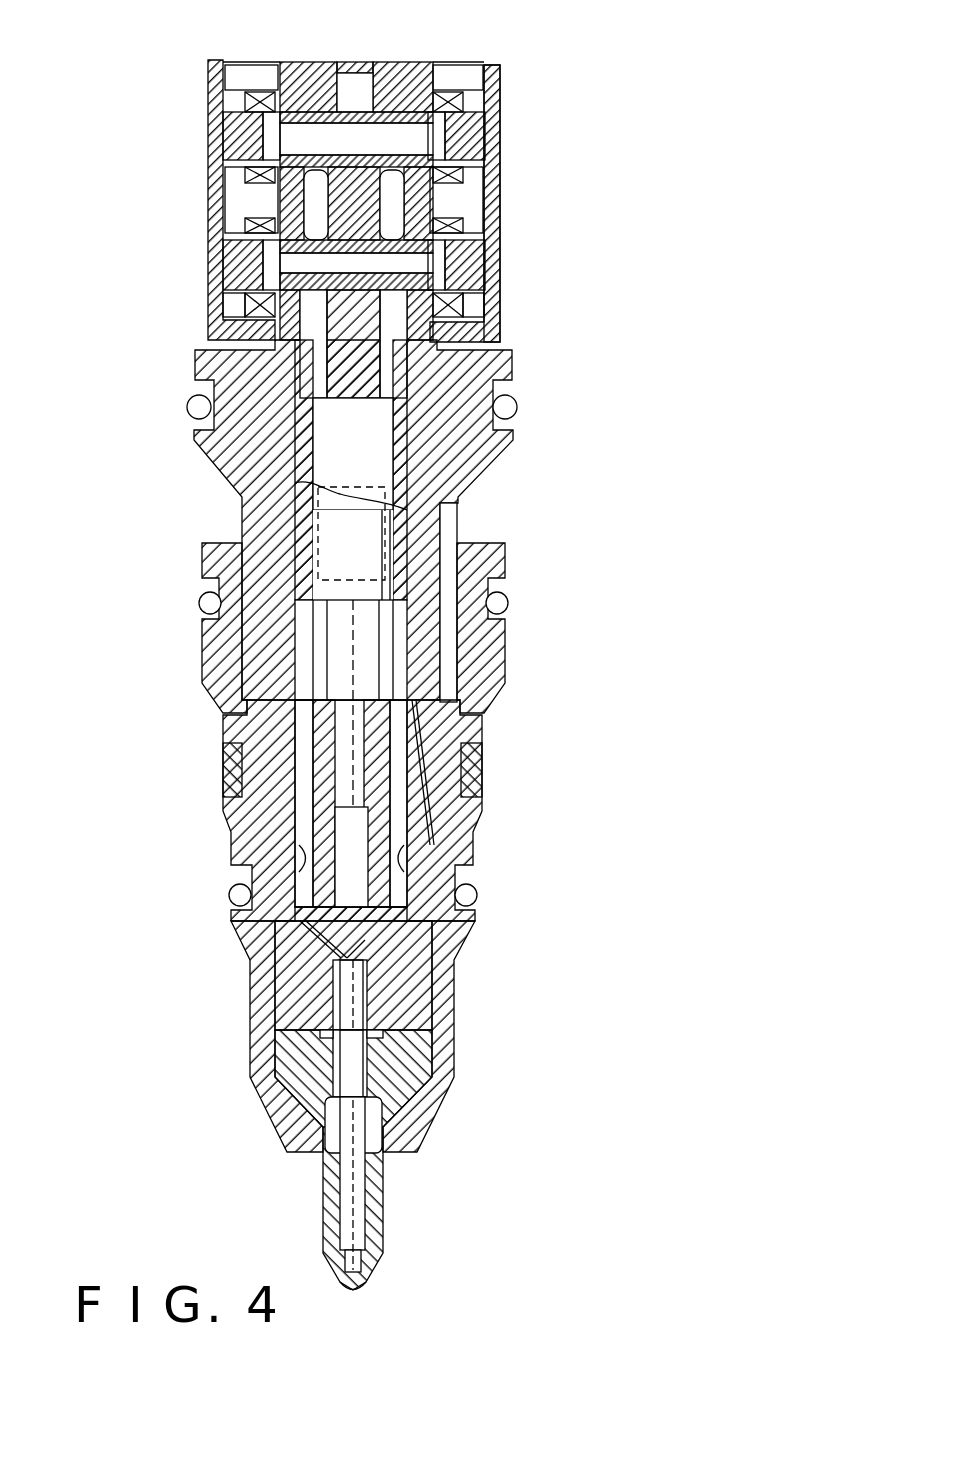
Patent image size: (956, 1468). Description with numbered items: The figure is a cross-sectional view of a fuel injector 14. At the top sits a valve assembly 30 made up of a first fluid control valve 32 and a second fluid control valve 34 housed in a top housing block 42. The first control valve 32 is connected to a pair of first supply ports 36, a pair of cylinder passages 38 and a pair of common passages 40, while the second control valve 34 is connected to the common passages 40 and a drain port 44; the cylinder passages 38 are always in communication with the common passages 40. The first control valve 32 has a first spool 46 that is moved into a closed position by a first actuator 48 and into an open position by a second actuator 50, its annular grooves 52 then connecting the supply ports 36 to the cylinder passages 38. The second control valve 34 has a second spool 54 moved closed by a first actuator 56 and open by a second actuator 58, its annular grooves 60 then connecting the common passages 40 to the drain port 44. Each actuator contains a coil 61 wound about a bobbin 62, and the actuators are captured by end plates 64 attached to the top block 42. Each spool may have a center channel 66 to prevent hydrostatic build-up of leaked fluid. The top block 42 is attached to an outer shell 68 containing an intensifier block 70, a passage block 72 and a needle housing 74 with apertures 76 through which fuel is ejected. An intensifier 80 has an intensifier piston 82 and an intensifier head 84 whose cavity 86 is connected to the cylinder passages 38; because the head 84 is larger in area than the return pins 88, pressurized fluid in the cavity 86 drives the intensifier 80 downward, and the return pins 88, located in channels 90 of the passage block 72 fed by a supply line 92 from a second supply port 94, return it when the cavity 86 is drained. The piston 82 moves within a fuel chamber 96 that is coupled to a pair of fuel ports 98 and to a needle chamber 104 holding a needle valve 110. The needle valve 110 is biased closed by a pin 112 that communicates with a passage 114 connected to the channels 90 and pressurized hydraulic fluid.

The fuel injector 14 is at (550, 609).
The valve assembly 30 is at (576, 212).
The first fluid control valve 32 is at (432, 300).
The second fluid control valve 34 is at (433, 155).
The first supply ports 36 is at (300, 352).
The cylinder passages 38 is at (516, 408).
The common passages 40 is at (393, 202).
The top housing block 42 is at (445, 90).
The drain port 44 is at (353, 82).
The first spool 46 is at (281, 278).
The first actuator 48 is at (382, 298).
The second actuator 50 is at (241, 313).
The annular grooves 52 is at (392, 370).
The second spool 54 is at (230, 160).
The first actuator 56 is at (500, 62).
The second actuator 58 is at (257, 112).
The annular grooves 60 is at (380, 75).
The coil 61 is at (262, 90).
The bobbin 62 is at (247, 92).
The end plates 64 is at (245, 255).
The center channel 66 is at (407, 268).
The outer shell 68 is at (479, 663).
The intensifier block 70 is at (450, 802).
The passage block 72 is at (404, 971).
The needle housing 74 is at (404, 1076).
The apertures 76 is at (367, 1274).
The intensifier 80 is at (318, 648).
The intensifier piston 82 is at (343, 718).
The intensifier head 84 is at (305, 527).
The cavity 86 is at (353, 454).
The return pins 88 is at (430, 748).
The channels 90 is at (402, 843).
The supply line 92 is at (448, 752).
The second supply port 94 is at (457, 514).
The fuel chamber 96 is at (369, 864).
The fuel ports 98 is at (233, 763).
The needle chamber 104 is at (394, 1138).
The needle valve 110 is at (347, 1187).
The pin 112 is at (345, 1000).
The passage 114 is at (305, 942).